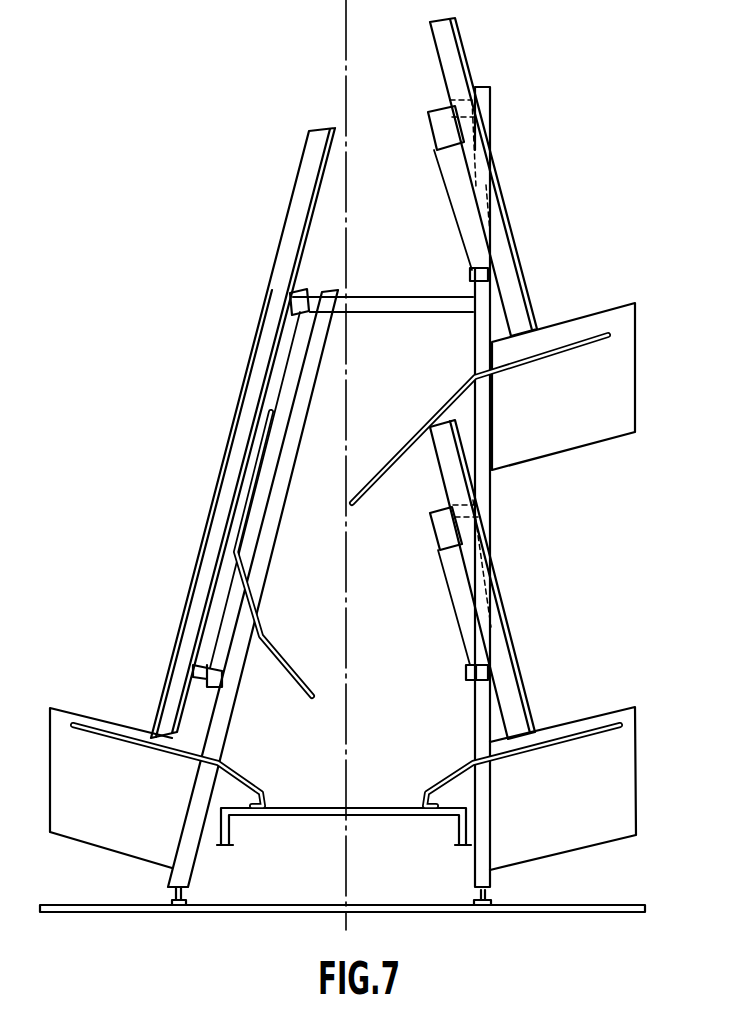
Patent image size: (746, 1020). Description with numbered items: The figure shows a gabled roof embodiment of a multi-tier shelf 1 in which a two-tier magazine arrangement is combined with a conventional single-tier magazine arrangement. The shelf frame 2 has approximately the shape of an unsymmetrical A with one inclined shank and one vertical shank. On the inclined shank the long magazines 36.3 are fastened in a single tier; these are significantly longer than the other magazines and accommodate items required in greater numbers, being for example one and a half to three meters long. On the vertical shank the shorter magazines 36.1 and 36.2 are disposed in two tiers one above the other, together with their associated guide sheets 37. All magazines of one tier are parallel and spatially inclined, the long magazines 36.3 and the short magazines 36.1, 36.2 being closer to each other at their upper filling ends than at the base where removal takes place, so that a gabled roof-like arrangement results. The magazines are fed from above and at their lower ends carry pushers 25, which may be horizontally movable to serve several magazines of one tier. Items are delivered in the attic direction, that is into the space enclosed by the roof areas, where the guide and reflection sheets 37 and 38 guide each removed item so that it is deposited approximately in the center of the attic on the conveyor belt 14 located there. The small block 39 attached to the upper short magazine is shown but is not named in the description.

The multi-tier shelf 1 is at (518, 119).
The frame 2 is at (488, 502).
The conveyor belt 14 is at (378, 820).
The pusher 25 is at (623, 324).
The upper short magazine 36.1 is at (448, 50).
The lower short magazine 36.2 is at (505, 678).
The long magazine 36.3 is at (310, 165).
The guide sheet 37 is at (455, 398).
The reflection sheet 38 is at (288, 673).
The mounting block 39 is at (440, 138).